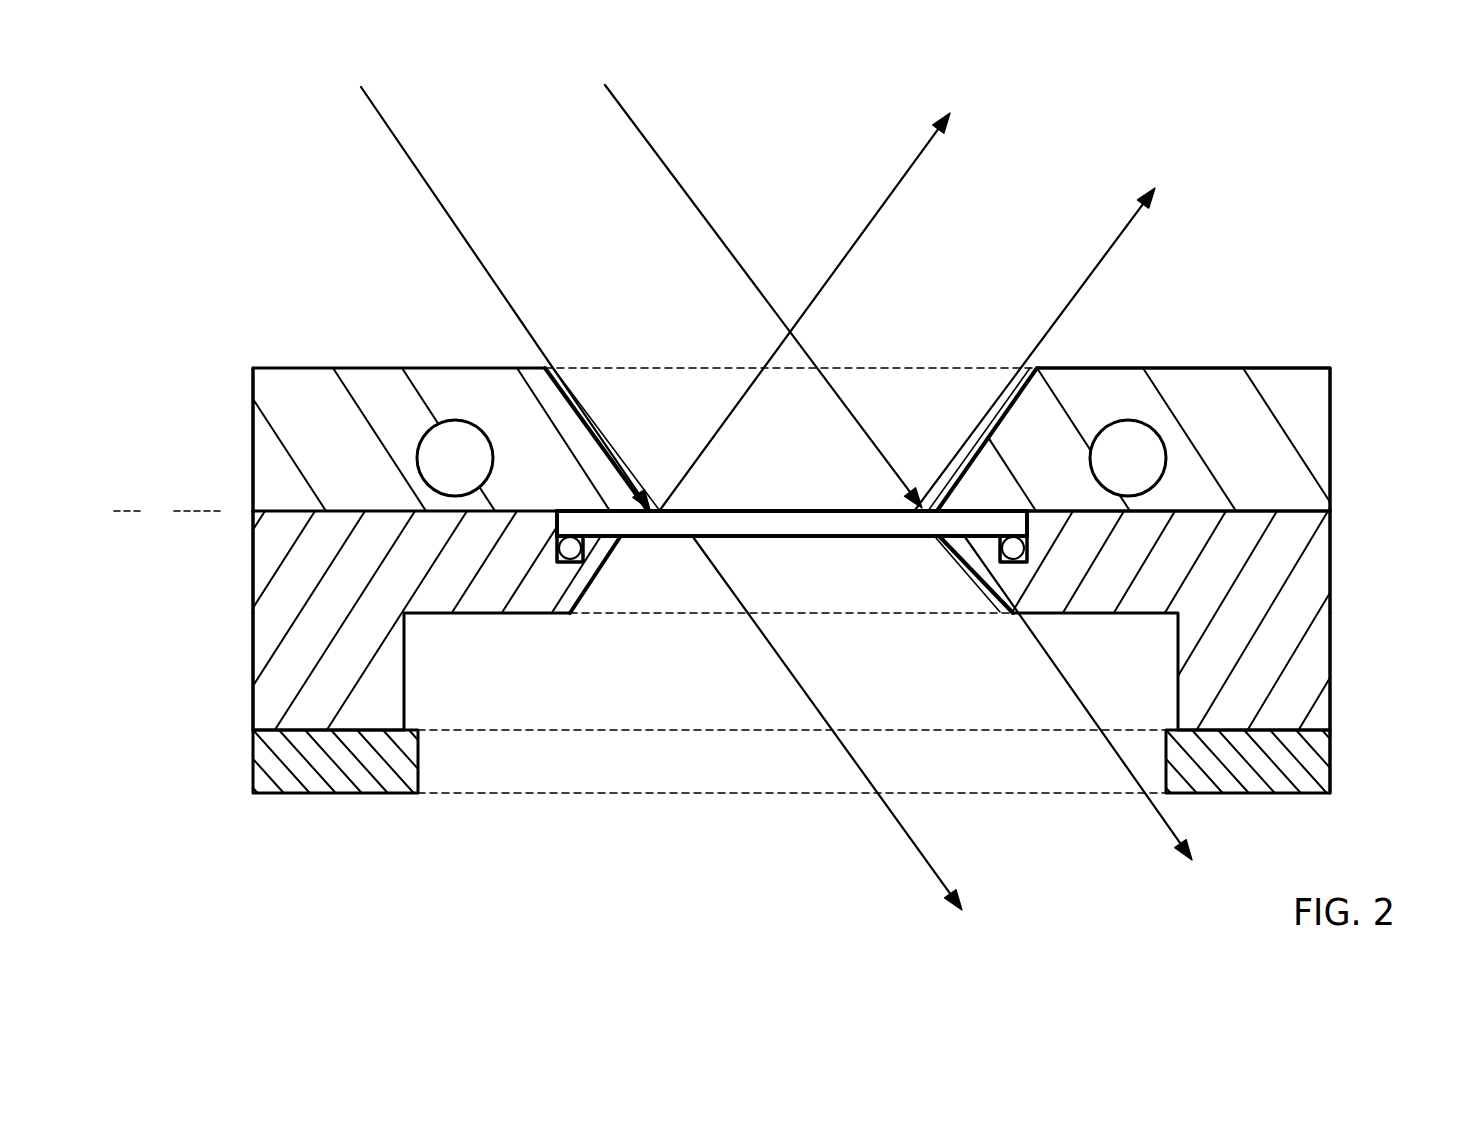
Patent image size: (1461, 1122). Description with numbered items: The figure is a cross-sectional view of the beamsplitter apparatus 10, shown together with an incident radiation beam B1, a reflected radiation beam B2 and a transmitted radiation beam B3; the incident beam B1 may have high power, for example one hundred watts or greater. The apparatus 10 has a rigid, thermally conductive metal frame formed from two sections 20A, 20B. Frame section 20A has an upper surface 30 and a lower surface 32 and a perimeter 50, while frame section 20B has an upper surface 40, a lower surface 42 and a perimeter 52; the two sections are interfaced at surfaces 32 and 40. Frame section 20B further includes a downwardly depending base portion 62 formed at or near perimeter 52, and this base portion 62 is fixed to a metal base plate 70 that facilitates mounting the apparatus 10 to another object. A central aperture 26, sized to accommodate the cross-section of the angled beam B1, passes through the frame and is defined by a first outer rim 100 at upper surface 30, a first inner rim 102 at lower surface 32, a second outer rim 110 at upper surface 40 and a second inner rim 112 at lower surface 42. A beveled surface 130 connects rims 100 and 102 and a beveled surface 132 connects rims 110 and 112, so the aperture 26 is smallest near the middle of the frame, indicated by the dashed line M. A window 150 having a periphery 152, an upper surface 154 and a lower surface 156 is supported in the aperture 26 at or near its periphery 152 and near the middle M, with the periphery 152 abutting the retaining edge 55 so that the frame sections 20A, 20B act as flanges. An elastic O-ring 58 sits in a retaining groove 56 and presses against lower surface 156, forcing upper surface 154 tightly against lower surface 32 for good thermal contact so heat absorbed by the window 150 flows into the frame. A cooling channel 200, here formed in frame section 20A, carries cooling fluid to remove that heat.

The beamsplitter apparatus 10 is at (1350, 143).
The frame section 20A is at (345, 437).
The frame section 20B is at (357, 582).
The central aperture 26 is at (731, 662).
The upper surface 30 is at (1270, 368).
The lower surface 32 is at (1308, 516).
The upper surface 40 is at (1300, 462).
The lower surface 42 is at (1330, 764).
The perimeter 50 is at (238, 418).
The perimeter 52 is at (238, 559).
The retaining edge 55 is at (566, 518).
The retaining groove 56 is at (1013, 552).
The O-ring 58 is at (1003, 615).
The base portion 62 is at (238, 650).
The base plate 70 is at (250, 774).
The first outer rim 100 is at (557, 368).
The first inner rim 102 is at (747, 368).
The second outer rim 110 is at (570, 613).
The second inner rim 112 is at (620, 537).
The beveled surface 130 is at (594, 432).
The beveled surface 132 is at (985, 592).
The window 150 is at (975, 523).
The periphery 152 is at (557, 535).
The upper surface 154 is at (833, 510).
The lower surface 156 is at (776, 537).
The cooling channel 200 is at (445, 420).
The incident radiation beam B1 is at (408, 158).
The reflected radiation beam B2 is at (1128, 235).
The transmitted radiation beam B3 is at (937, 877).
The middle of the frame M is at (169, 513).